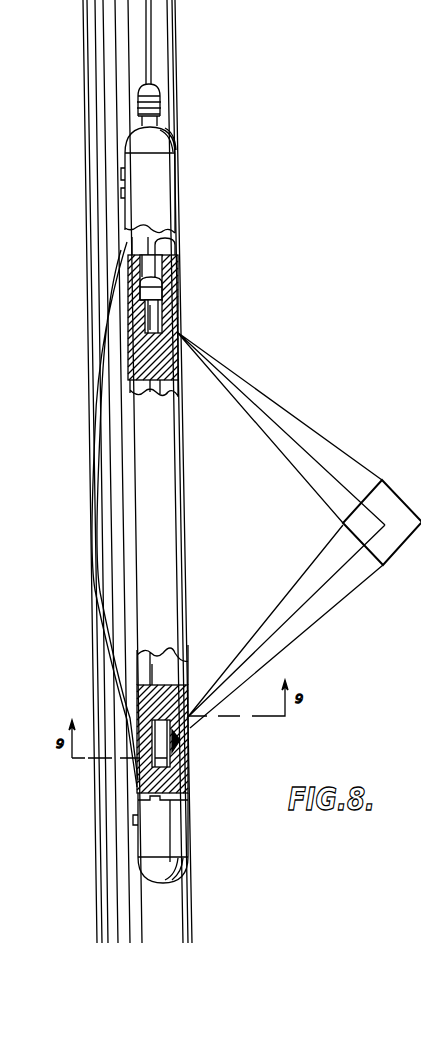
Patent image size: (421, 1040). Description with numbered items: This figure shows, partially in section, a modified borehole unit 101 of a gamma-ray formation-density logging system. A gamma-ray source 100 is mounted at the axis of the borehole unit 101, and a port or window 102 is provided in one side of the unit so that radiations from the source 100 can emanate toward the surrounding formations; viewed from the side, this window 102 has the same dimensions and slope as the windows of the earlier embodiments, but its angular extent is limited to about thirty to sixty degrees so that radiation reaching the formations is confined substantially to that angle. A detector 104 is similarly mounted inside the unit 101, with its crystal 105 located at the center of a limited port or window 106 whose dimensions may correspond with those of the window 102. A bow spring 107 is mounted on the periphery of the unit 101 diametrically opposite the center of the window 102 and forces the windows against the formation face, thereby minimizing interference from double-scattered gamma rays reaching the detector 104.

The gamma-ray source 100 is at (186, 686).
The borehole unit 101 is at (183, 783).
The port or window 102 is at (185, 745).
The detector 104 is at (162, 273).
The crystal 105 is at (163, 308).
The port or window 106 is at (177, 332).
The bow spring 107 is at (115, 293).